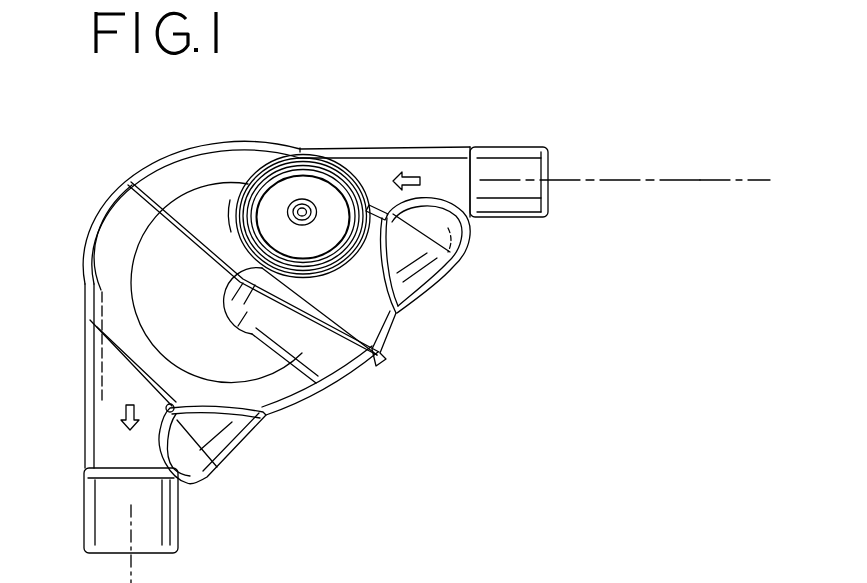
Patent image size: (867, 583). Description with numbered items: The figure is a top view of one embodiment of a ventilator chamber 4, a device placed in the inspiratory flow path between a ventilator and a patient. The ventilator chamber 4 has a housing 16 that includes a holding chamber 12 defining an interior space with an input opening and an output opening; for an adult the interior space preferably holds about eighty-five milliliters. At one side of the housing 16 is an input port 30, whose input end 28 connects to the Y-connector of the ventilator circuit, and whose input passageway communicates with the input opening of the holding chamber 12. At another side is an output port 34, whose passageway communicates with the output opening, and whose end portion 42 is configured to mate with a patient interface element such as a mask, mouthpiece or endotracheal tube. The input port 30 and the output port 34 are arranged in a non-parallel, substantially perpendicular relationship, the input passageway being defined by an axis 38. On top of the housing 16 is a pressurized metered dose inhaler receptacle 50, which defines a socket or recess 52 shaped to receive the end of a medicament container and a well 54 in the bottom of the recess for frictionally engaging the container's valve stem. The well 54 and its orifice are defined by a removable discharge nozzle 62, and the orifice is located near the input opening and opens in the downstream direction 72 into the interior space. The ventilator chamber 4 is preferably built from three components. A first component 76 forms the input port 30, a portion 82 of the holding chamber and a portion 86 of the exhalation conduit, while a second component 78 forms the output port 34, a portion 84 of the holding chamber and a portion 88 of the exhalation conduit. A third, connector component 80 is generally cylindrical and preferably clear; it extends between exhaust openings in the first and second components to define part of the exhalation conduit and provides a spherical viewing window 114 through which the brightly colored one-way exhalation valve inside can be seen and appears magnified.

The ventilator chamber 4 is at (377, 403).
The holding chamber 12 is at (183, 301).
The housing 16 is at (100, 208).
The input end 28 is at (550, 180).
The input port 30 is at (496, 148).
The output port 34 is at (180, 534).
The axis 38 is at (722, 180).
The end portion 42 is at (84, 520).
The pressurized metered dose inhaler receptacle 50 is at (296, 156).
The socket or recess 52 is at (283, 203).
The well 54 is at (307, 207).
The discharge nozzle 62 is at (298, 184).
The downstream direction 72 is at (412, 172).
The first component 76 is at (384, 160).
The second component 78 is at (108, 378).
The third component or connector component 80 is at (322, 349).
The portion of the holding chamber 82 is at (197, 160).
The portion of the holding chamber 84 is at (85, 287).
The portion of the exhalation conduit 86 is at (442, 269).
The portion of the exhalation conduit 88 is at (248, 446).
The viewing window 114 is at (344, 365).